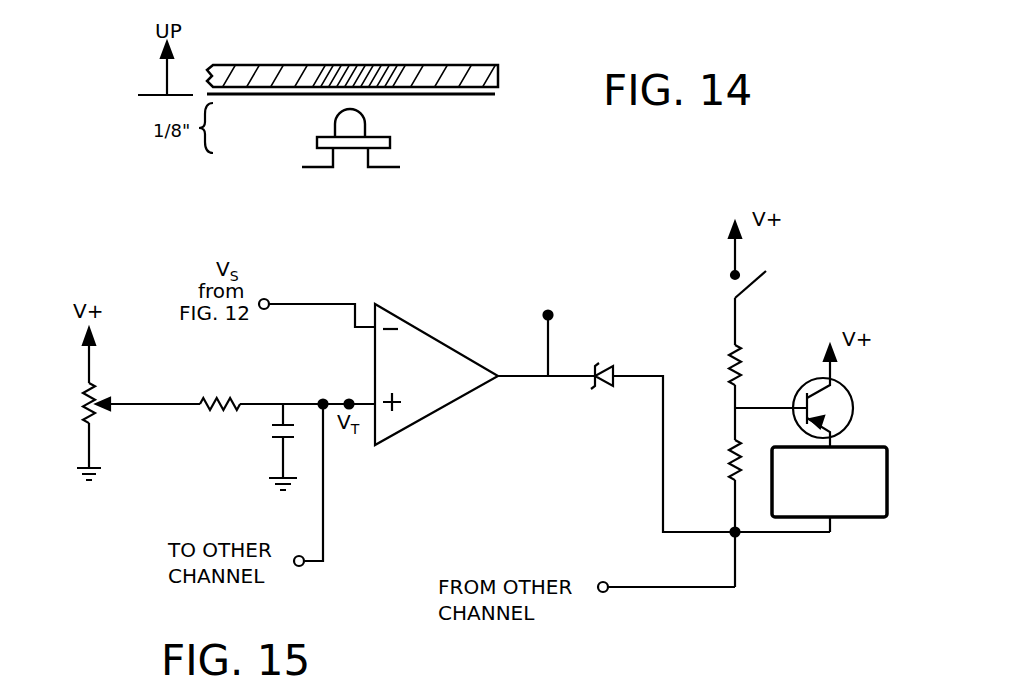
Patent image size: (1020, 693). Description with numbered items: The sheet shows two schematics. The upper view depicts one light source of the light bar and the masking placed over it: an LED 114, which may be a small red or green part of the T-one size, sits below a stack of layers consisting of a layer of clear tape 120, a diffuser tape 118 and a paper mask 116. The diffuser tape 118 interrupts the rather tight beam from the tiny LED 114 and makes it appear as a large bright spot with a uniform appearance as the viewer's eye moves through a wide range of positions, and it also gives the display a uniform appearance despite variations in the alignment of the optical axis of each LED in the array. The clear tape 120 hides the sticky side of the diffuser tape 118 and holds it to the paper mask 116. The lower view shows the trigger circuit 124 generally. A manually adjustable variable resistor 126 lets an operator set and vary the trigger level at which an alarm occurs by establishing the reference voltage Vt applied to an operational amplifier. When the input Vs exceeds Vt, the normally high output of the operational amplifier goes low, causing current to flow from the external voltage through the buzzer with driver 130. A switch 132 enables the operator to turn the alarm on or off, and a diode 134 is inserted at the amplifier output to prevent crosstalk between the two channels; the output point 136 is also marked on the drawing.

In FIG. 14, the LED 114 is at (391, 141).
In FIG. 14, the paper mask 116 is at (483, 67).
In FIG. 14, the diffuser tape 118 is at (358, 66).
In FIG. 14, the clear tape 120 is at (483, 99).
In FIG. 15, the trigger circuit 124 is at (768, 585).
In FIG. 15, the manually adjustable variable resistor 126 is at (83, 407).
In FIG. 15, the buzzer with driver 130 is at (873, 440).
In FIG. 15, the switch 132 is at (742, 285).
In FIG. 15, the diode 134 is at (604, 362).
In FIG. 15, the output node 136 is at (570, 300).